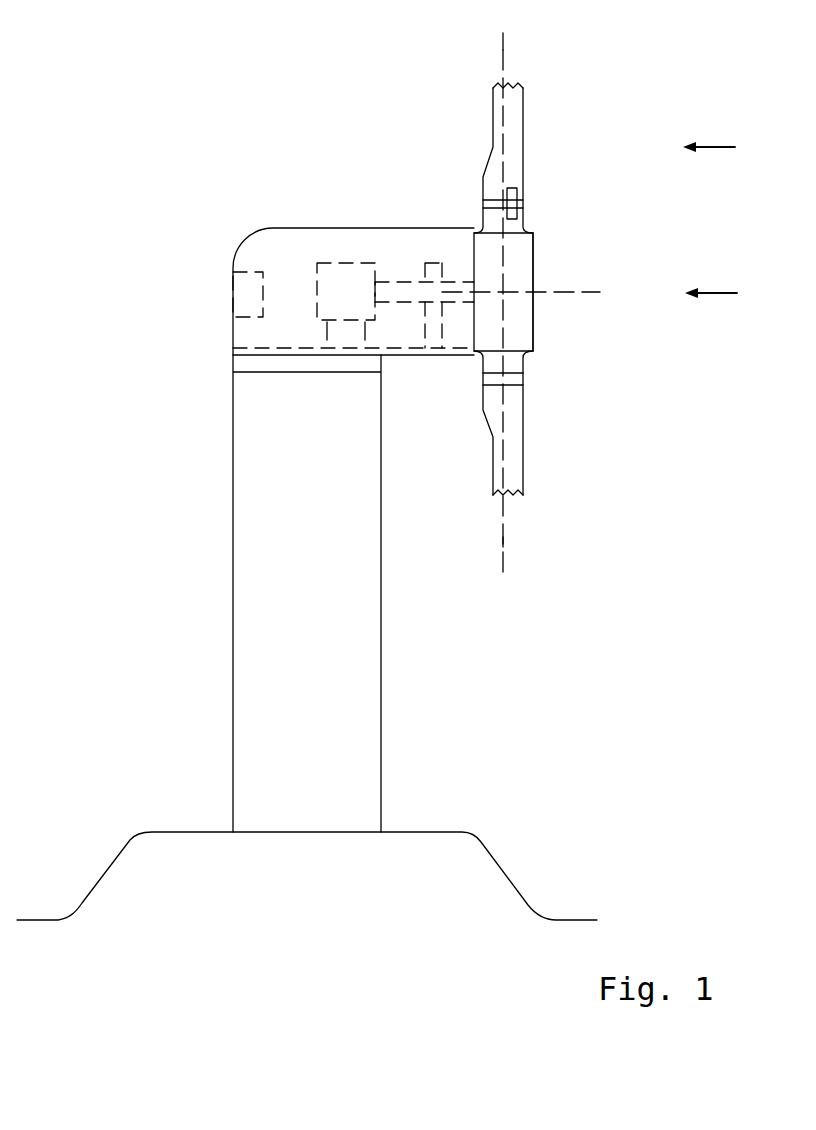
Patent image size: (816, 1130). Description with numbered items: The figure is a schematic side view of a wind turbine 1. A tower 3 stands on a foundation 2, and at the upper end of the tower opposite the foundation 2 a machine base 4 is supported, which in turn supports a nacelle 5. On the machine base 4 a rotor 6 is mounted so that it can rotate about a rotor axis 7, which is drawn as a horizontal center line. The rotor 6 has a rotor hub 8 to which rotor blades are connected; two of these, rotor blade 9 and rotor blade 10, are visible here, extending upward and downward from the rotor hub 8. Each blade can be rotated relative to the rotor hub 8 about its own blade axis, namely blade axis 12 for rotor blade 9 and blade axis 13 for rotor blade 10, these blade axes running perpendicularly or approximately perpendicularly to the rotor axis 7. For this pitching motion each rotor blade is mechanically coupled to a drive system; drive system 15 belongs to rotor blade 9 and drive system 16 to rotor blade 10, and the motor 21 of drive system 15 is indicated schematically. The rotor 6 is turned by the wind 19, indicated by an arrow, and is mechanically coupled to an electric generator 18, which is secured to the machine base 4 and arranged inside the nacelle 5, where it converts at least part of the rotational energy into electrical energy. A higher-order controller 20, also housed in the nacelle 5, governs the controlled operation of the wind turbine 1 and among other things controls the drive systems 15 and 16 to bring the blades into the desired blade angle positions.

The wind turbine 1 is at (135, 92).
The foundation 2 is at (117, 868).
The tower 3 is at (238, 628).
The machine base 4 is at (247, 348).
The nacelle 5 is at (292, 228).
The rotor 6 is at (537, 230).
The rotor axis 7 is at (593, 291).
The rotor hub 8 is at (533, 332).
The rotor blade 9 is at (495, 117).
The rotor blade 10 is at (520, 450).
The blade axis 12 is at (502, 44).
The blade axis 13 is at (505, 541).
The drive system 15 is at (487, 202).
The drive system 16 is at (517, 382).
The electric generator 18 is at (332, 262).
The wind 19 is at (708, 147).
The higher-order controller 20 is at (248, 270).
The motor 21 is at (510, 187).